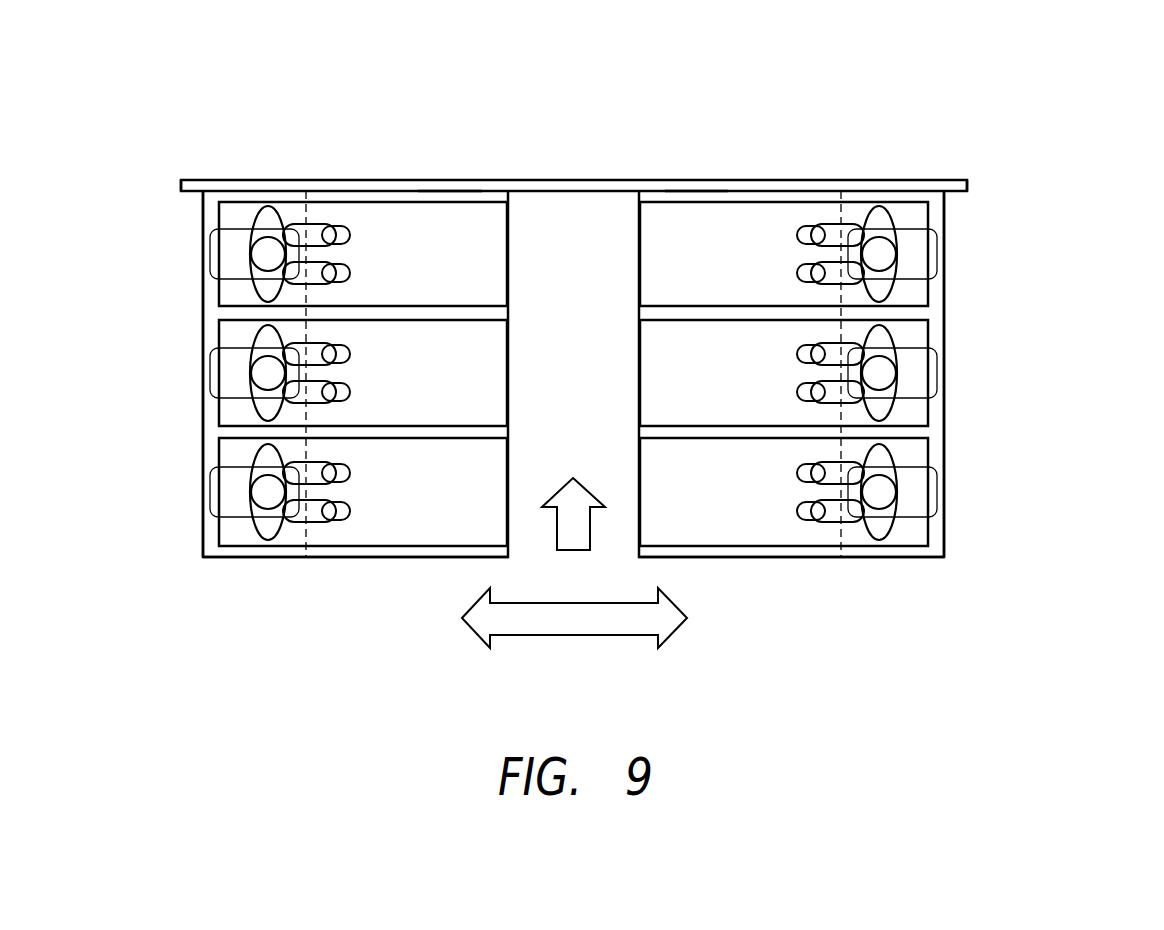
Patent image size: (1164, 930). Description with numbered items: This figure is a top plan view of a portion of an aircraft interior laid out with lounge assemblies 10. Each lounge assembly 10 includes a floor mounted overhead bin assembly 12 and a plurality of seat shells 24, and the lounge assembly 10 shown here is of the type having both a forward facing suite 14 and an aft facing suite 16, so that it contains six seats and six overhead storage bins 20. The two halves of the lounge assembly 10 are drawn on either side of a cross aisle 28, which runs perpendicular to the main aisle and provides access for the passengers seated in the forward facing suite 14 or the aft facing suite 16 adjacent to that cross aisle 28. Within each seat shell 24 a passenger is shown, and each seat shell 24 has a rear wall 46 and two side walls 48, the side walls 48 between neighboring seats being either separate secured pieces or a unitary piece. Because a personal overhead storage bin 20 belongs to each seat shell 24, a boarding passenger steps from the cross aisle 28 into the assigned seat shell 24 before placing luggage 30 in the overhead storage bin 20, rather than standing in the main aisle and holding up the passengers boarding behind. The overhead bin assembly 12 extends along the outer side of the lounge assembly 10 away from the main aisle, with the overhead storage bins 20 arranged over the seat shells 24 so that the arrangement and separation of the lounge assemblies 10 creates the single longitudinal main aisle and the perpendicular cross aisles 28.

The lounge assembly 10 is at (366, 110).
The floor mounted overhead bin assembly 12 is at (200, 150).
The forward facing suite 14 is at (826, 595).
The aft facing suite 16 is at (328, 594).
The overhead storage bin 20 is at (230, 215).
The seat shell 24 is at (418, 197).
The cross aisle 28 is at (559, 386).
The luggage 30 is at (230, 257).
The rear wall 46 is at (937, 297).
The side wall 48 is at (480, 197).